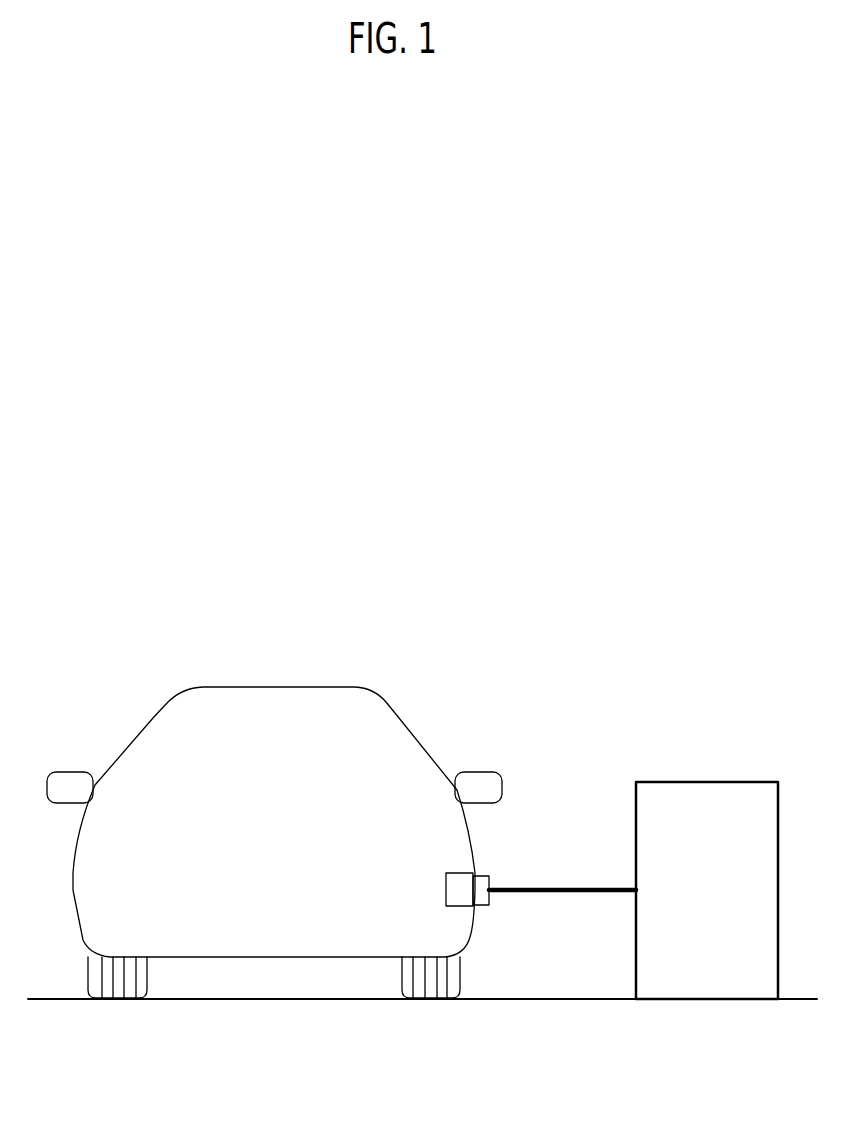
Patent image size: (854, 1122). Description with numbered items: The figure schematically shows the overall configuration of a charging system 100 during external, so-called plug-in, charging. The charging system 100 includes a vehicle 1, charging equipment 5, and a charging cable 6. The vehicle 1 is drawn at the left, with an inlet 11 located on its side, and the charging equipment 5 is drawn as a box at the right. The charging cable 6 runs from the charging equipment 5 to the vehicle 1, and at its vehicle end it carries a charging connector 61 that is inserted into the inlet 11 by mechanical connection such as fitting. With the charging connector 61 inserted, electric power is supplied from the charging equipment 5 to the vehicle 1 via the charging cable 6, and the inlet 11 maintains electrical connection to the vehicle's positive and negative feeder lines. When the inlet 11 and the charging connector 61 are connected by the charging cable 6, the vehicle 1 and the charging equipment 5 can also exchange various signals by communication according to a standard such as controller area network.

The charging system 100 is at (123, 567).
The vehicle 1 is at (321, 687).
The inlet 11 is at (457, 873).
The charging connector 61 is at (480, 873).
The charging cable 6 is at (587, 886).
The charging equipment 5 is at (752, 782).